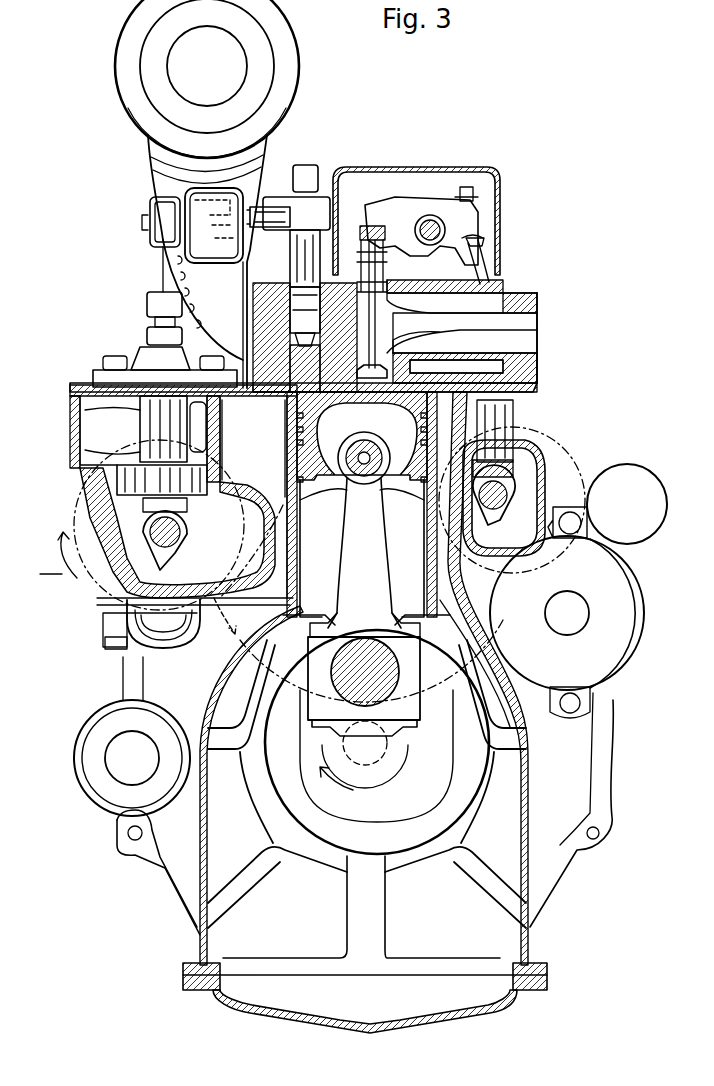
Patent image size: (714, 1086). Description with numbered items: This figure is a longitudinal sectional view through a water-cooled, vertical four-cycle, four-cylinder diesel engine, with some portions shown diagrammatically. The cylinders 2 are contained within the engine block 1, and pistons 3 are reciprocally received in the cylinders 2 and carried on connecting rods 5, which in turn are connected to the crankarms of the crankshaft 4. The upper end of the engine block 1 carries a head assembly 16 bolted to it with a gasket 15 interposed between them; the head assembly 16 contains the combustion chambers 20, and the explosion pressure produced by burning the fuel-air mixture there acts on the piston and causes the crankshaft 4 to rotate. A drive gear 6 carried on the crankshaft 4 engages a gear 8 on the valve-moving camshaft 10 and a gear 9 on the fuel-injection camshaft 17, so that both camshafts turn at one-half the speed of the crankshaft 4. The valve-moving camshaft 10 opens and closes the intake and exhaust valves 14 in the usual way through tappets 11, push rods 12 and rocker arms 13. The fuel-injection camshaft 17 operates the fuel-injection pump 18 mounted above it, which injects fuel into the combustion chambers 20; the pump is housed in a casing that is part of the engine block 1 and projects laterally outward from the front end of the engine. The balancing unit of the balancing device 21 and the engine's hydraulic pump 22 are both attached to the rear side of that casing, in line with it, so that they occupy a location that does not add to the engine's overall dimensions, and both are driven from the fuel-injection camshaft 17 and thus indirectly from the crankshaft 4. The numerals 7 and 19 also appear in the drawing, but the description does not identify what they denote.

The engine block 1 is at (550, 962).
The cylinders 2 is at (300, 575).
The pistons 3 is at (420, 350).
The crankshaft 4 is at (300, 800).
The connecting rods 5 is at (370, 560).
The drive gear 6 is at (410, 790).
The oil passage 7 is at (262, 657).
The gear 8 is at (545, 455).
The gear 9 is at (80, 512).
The valve-moving camshaft 10 is at (507, 500).
The tappets 11 is at (548, 440).
The push rods 12 is at (482, 241).
The rocker arms 13 is at (411, 207).
The intake and exhaust valves 14 is at (357, 232).
The gasket 15 is at (530, 385).
The head assembly 16 is at (530, 355).
The fuel-injection camshaft 17 is at (157, 535).
The fuel-injection pump 18 is at (78, 418).
The fuel injector 19 is at (313, 257).
The combustion chambers 20 is at (277, 215).
The balancing device 21 is at (163, 656).
The hydraulic pump 22 is at (200, 430).